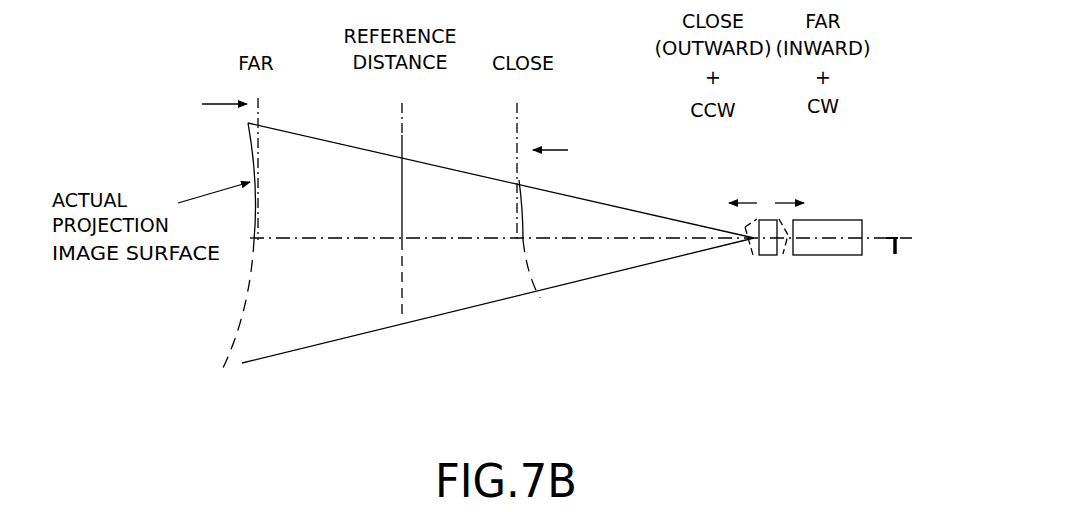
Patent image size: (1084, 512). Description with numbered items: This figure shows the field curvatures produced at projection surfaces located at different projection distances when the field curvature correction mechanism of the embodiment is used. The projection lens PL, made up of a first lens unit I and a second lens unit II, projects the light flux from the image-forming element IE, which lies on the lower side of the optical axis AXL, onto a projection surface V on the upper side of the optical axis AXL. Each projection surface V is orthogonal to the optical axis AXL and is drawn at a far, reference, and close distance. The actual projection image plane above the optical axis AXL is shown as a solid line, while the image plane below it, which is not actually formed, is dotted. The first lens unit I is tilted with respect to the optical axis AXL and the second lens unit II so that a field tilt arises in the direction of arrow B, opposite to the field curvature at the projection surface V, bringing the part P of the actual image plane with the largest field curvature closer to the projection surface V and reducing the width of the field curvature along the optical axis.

The arrow B is at (222, 102).
The part of the actual projection image plane P is at (248, 123).
The projection surface V is at (260, 120).
The optical axis AXL is at (605, 240).
The first lens unit I is at (762, 271).
The second lens unit II is at (827, 279).
The projection lens PL is at (795, 302).
The image-forming element IE is at (902, 266).